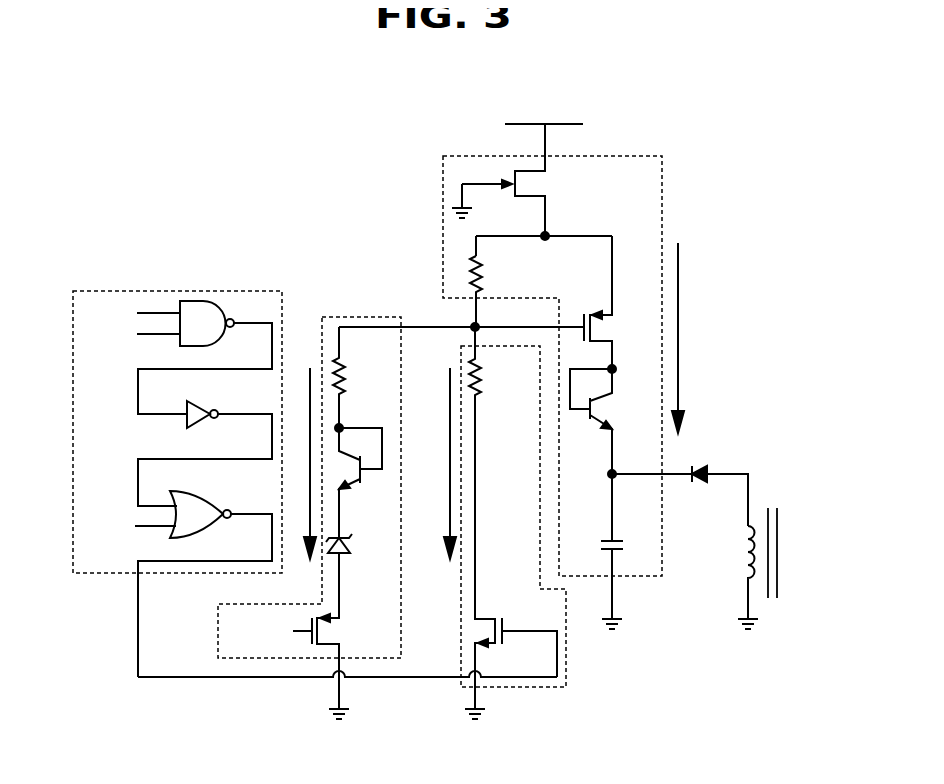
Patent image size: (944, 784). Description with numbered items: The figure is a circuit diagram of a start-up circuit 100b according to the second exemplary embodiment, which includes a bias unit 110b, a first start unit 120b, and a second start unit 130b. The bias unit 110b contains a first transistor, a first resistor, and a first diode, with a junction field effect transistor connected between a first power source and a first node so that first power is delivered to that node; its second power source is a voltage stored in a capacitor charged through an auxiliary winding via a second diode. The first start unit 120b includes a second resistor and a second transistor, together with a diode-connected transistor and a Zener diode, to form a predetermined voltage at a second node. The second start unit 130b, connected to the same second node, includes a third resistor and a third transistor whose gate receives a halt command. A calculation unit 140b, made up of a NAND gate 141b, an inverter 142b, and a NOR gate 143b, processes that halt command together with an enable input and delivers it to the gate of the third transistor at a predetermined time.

The start-up circuit 100b is at (133, 114).
The bias unit 110b is at (443, 191).
The first start unit 120b is at (362, 316).
The second start unit 130b is at (566, 667).
The calculation unit 140b is at (178, 290).
The NAND gate 141b is at (190, 347).
The inverter 142b is at (200, 420).
The NOR gate 143b is at (190, 540).